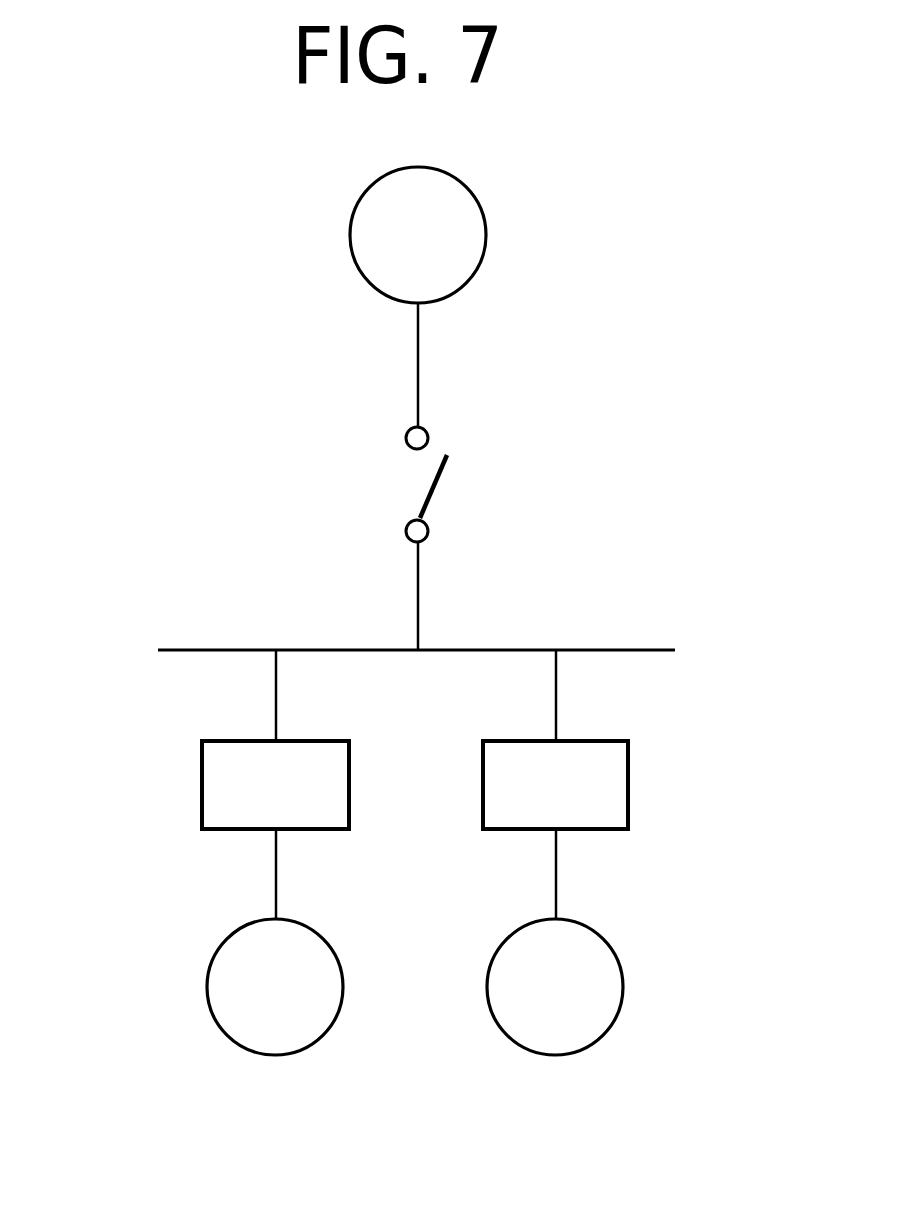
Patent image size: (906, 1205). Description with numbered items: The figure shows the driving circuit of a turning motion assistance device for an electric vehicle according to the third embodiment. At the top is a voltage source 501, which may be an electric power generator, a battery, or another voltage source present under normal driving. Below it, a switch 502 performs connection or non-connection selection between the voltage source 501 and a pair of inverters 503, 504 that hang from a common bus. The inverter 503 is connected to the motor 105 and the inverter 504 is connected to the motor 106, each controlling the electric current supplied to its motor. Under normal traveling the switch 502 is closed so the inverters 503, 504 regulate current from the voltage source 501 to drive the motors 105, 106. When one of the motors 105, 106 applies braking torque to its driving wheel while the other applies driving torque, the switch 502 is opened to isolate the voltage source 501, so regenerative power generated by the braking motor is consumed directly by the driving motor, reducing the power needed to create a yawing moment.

The voltage source 501 is at (488, 239).
The switch 502 is at (432, 490).
The inverter 503 is at (202, 782).
The inverter 504 is at (628, 790).
The motor 105 is at (207, 985).
The motor 106 is at (623, 989).